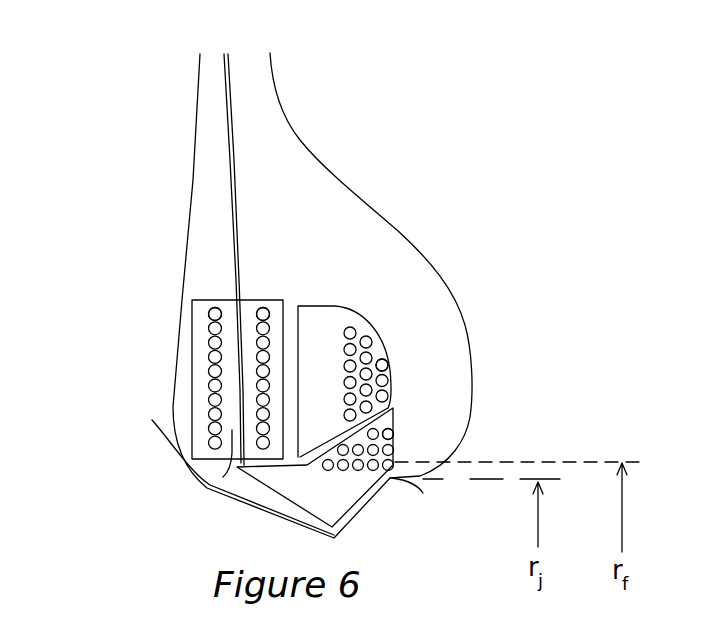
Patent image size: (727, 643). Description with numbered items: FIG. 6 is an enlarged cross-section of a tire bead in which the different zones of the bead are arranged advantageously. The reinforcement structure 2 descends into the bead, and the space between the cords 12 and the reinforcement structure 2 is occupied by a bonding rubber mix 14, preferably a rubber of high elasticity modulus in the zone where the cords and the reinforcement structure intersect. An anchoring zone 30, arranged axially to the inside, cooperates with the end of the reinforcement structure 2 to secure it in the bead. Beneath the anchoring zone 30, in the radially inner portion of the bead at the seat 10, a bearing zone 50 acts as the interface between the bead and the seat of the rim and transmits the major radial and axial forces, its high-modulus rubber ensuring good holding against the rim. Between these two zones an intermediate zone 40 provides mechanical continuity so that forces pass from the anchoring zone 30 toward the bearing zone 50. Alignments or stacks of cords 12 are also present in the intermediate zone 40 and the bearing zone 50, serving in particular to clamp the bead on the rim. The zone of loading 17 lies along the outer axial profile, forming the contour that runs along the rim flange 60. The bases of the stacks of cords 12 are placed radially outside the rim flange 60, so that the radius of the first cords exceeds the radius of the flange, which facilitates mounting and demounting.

The reinforcement structure 2 is at (233, 190).
The seat 10 is at (257, 509).
The cords 12 is at (210, 313).
The bonding rubber mix 14 is at (223, 477).
The zone of loading 17 is at (363, 498).
The anchoring zone 30 is at (202, 362).
The intermediate zone 40 is at (340, 318).
The bearing zone 50 is at (365, 483).
The rim flange 60 is at (392, 478).